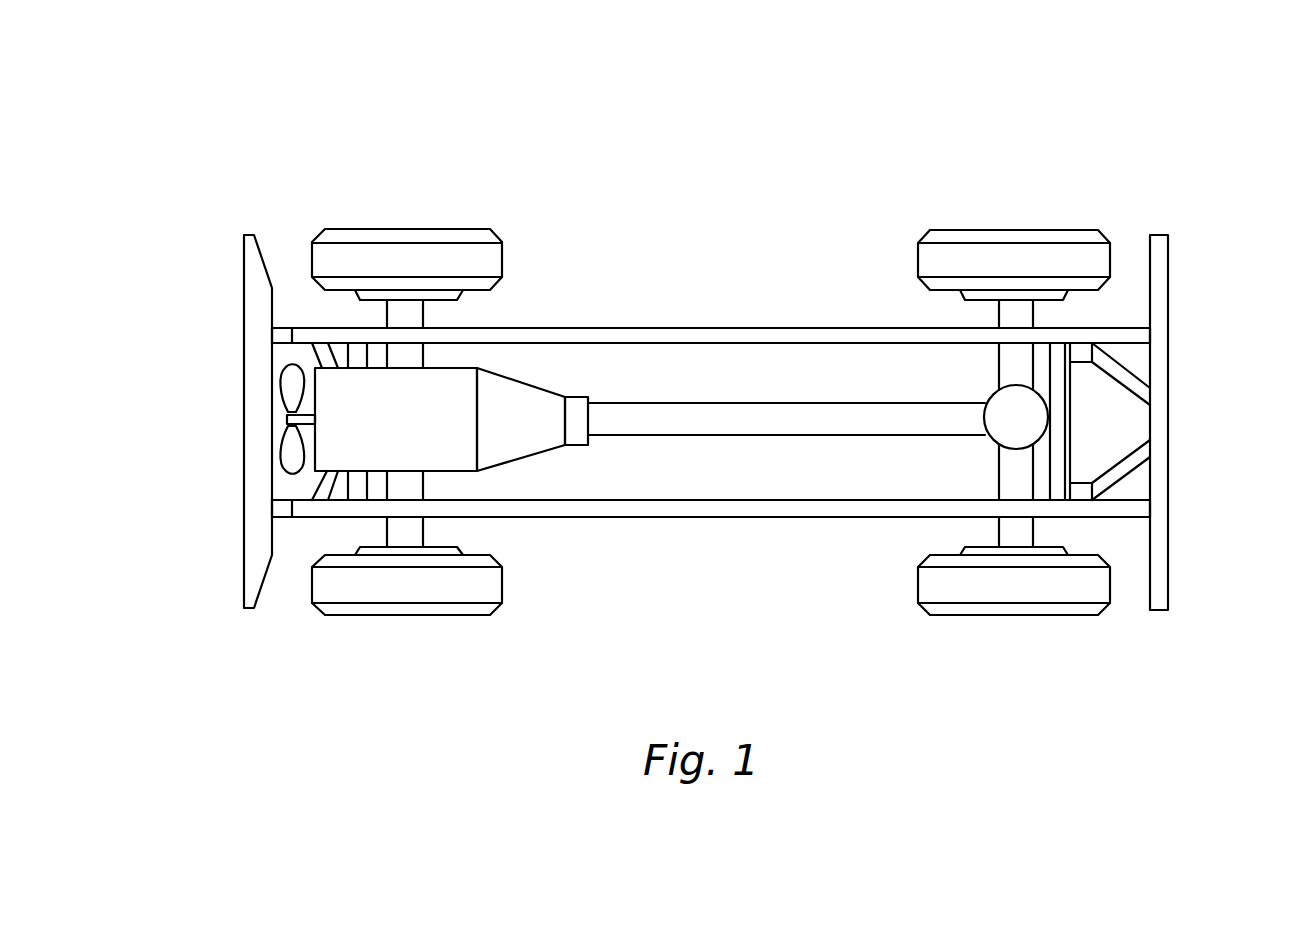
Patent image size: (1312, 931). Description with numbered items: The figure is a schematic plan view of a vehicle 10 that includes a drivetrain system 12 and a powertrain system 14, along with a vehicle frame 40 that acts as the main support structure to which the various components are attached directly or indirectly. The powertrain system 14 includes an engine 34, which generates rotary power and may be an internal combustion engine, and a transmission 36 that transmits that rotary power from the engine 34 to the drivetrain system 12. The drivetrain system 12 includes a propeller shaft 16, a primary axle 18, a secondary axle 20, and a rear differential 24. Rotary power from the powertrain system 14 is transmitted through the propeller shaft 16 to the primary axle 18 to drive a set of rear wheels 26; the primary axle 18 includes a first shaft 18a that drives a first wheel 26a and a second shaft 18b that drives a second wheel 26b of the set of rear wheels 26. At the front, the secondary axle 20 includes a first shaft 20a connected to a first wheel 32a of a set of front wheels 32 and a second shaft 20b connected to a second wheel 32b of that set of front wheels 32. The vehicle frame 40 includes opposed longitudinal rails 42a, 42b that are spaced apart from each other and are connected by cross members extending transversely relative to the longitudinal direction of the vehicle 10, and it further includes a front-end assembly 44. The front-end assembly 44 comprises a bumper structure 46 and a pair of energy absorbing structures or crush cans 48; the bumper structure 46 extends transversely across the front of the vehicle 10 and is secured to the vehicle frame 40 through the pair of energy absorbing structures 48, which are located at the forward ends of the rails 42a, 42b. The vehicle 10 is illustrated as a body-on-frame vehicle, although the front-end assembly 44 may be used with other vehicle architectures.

The vehicle 10 is at (262, 98).
The drivetrain system 12 is at (797, 378).
The powertrain system 14 is at (328, 458).
The propeller shaft 16 is at (649, 420).
The primary axle 18 is at (1047, 532).
The first shaft 18a is at (1015, 462).
The second shaft 18b is at (1023, 313).
The secondary axle 20 is at (398, 531).
The first shaft 20a is at (412, 481).
The second shaft 20b is at (410, 357).
The rear differential 24 is at (1037, 410).
The set of rear wheels 26 is at (961, 191).
The first wheel 26a is at (1000, 593).
The second wheel 26b is at (1045, 237).
The set of front wheels 32 is at (386, 192).
The first wheel 32a is at (395, 588).
The second wheel 32b is at (472, 237).
The engine 34 is at (345, 400).
The transmission 36 is at (543, 365).
The vehicle frame 40 is at (764, 280).
The longitudinal rail 42a is at (640, 335).
The longitudinal rail 42b is at (765, 510).
The front-end assembly 44 is at (220, 437).
The bumper structure 46 is at (255, 410).
The energy absorbing structures 48 is at (284, 335).